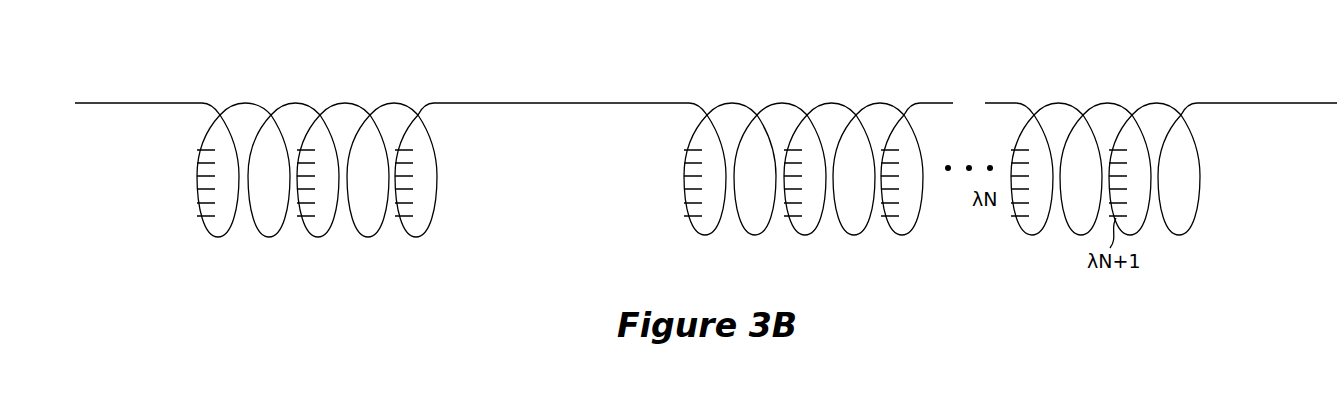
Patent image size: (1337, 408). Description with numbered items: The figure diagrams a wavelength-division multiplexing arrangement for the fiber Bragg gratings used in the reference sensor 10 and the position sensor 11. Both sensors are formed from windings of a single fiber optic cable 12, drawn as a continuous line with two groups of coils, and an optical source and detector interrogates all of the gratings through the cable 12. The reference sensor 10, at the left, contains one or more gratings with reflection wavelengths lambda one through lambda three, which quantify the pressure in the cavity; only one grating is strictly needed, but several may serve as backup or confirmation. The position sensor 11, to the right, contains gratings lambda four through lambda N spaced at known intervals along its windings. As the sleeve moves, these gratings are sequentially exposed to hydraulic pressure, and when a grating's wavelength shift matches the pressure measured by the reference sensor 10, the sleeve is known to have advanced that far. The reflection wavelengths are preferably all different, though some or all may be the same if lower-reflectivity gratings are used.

The reference sensor 10 is at (340, 255).
The position sensor 11 is at (915, 255).
The fiber optic cable 12 is at (85, 103).